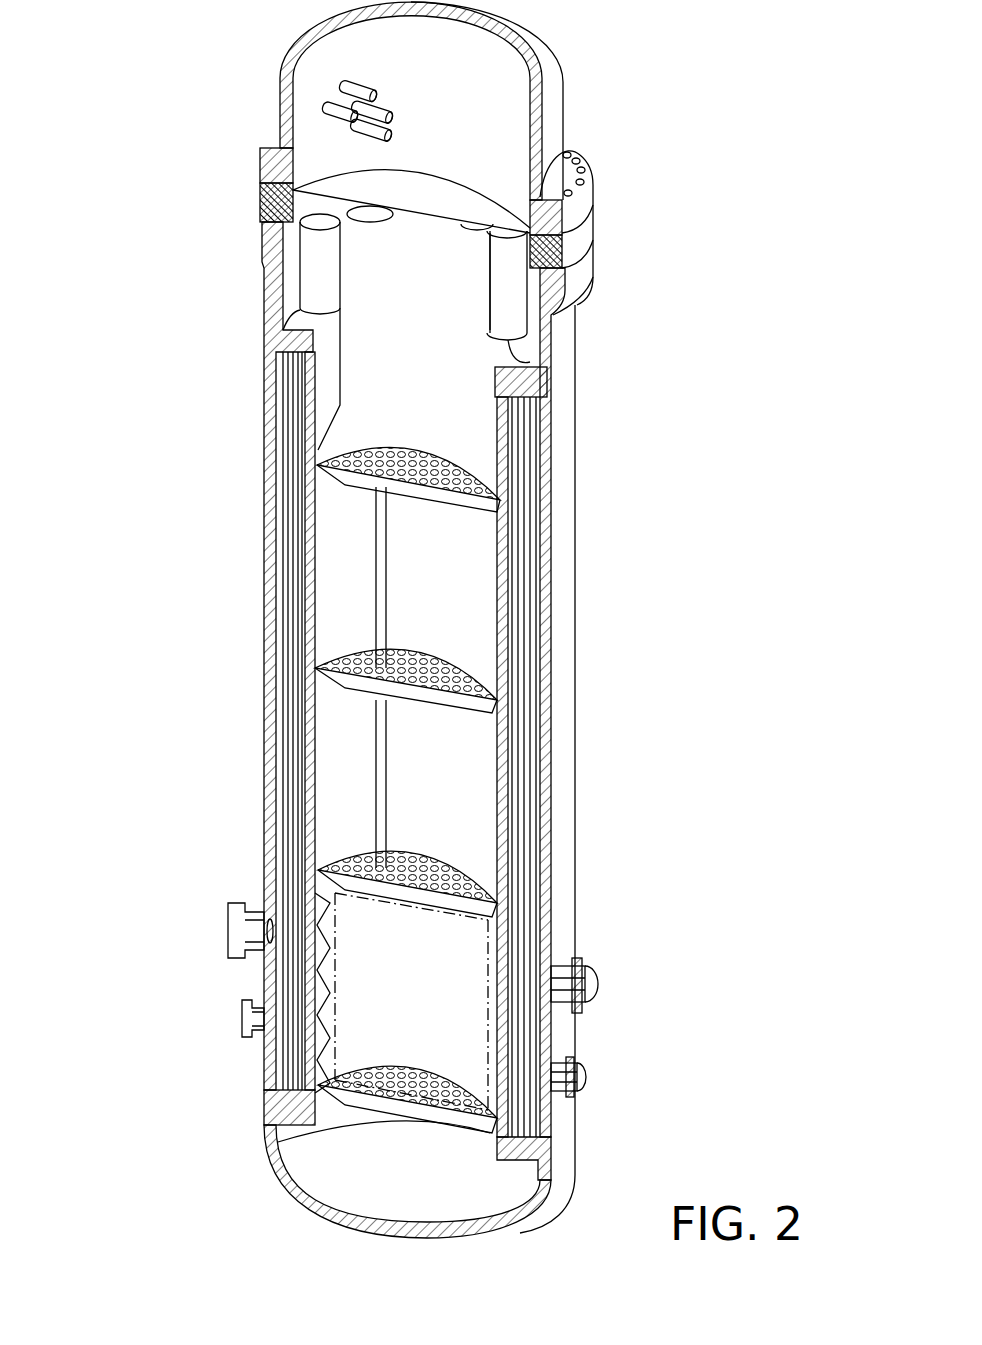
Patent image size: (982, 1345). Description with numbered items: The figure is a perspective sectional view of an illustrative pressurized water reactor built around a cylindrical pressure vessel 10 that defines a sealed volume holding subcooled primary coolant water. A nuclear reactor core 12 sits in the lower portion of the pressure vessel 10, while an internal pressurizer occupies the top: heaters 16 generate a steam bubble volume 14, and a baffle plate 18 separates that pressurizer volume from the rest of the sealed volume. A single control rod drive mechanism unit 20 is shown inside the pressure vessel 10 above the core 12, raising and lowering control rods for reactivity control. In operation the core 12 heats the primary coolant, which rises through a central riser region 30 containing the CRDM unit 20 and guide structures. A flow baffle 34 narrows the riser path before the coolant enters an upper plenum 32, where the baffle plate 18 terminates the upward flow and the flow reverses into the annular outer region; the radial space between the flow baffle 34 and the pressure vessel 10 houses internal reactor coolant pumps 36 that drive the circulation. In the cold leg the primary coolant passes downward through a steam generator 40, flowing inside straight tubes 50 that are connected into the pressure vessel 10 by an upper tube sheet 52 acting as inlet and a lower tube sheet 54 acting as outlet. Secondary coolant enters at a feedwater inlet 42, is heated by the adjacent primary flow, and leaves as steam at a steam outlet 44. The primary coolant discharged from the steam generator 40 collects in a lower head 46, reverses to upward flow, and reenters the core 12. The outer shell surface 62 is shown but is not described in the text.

The pressure vessel 10 is at (267, 283).
The nuclear reactor core 12 is at (370, 996).
The steam bubble volume 14 is at (462, 185).
The heaters 16 is at (342, 92).
The baffle plate 18 is at (500, 205).
The control rod drive mechanism unit 20 is at (375, 620).
The central riser region 30 is at (478, 785).
The upper plenum 32 is at (320, 205).
The flow baffle 34 is at (408, 395).
The internal reactor coolant pumps 36 is at (318, 276).
The steam generator 40 is at (580, 485).
The feedwater inlet 42 is at (580, 1073).
The steam outlet 44 is at (590, 963).
The lower head 46 is at (402, 1166).
The steam generator tubes 50 is at (528, 590).
The upper tube sheet 52 is at (537, 365).
The lower tube sheet 54 is at (548, 1140).
The outer shell surface 62 is at (563, 683).